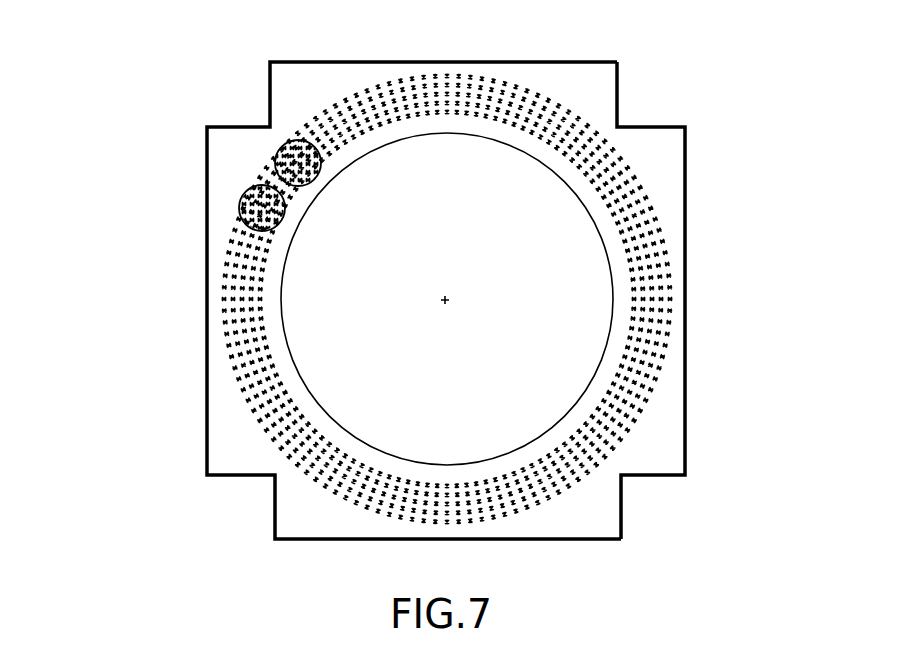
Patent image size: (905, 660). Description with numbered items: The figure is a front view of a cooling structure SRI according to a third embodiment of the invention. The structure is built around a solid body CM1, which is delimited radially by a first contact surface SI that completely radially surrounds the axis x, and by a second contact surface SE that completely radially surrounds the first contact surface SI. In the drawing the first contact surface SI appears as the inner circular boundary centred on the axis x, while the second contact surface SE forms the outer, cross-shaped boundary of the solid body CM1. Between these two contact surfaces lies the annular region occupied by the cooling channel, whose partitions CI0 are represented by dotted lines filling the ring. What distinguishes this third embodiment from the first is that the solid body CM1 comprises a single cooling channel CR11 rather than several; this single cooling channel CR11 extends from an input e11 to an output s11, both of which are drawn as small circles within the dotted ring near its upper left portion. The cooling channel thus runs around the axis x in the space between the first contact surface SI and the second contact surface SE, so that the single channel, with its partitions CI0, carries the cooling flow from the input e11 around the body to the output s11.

The cooling structure SRI is at (152, 92).
The second contact surface SE is at (695, 197).
The solid body CM1 is at (622, 537).
The partitions CI0 is at (243, 388).
The first contact surface SI is at (570, 201).
The output s11 is at (287, 141).
The cooling channel CR11 is at (240, 204).
The input e11 is at (253, 186).
The axis x is at (448, 297).